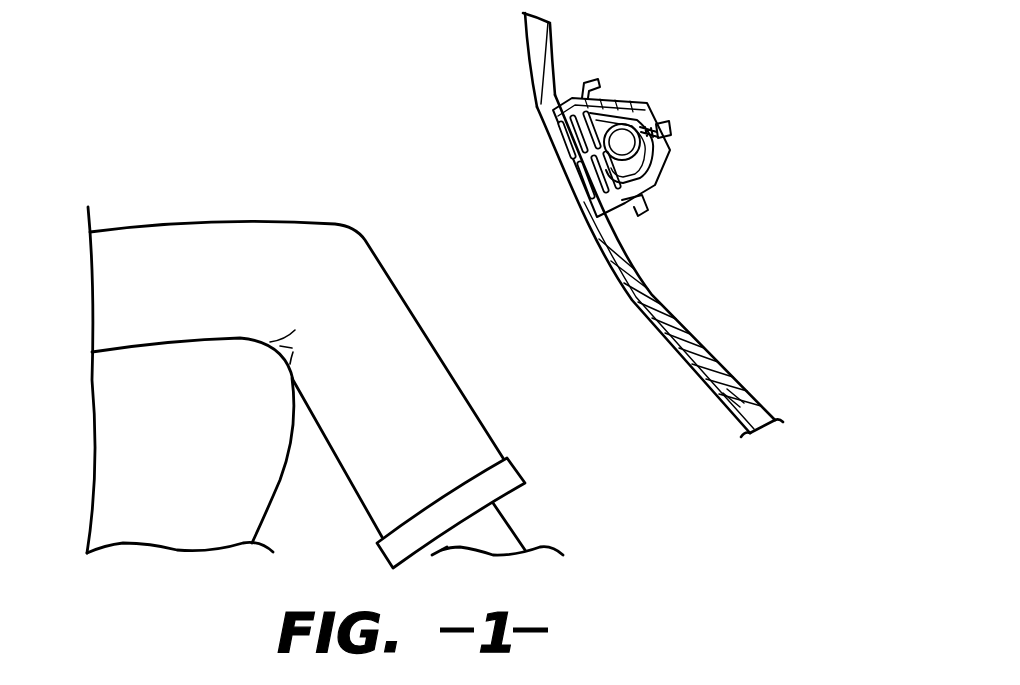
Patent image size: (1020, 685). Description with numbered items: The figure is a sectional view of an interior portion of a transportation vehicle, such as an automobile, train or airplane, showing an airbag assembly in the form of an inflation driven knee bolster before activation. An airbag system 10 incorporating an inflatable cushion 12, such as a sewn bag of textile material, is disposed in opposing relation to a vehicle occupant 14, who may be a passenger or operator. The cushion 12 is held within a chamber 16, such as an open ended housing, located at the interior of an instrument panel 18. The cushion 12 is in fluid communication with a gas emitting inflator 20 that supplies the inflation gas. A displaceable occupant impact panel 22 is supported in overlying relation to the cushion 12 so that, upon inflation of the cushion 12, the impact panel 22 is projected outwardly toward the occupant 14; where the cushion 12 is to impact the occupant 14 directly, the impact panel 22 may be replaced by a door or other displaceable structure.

The airbag system 10 is at (643, 122).
The inflatable cushion 12 is at (556, 108).
The vehicle occupant 14 is at (297, 222).
The chamber 16 is at (657, 180).
The instrument panel 18 is at (707, 353).
The gas emitting inflator 20 is at (632, 147).
The displaceable occupant impact panel 22 is at (640, 305).